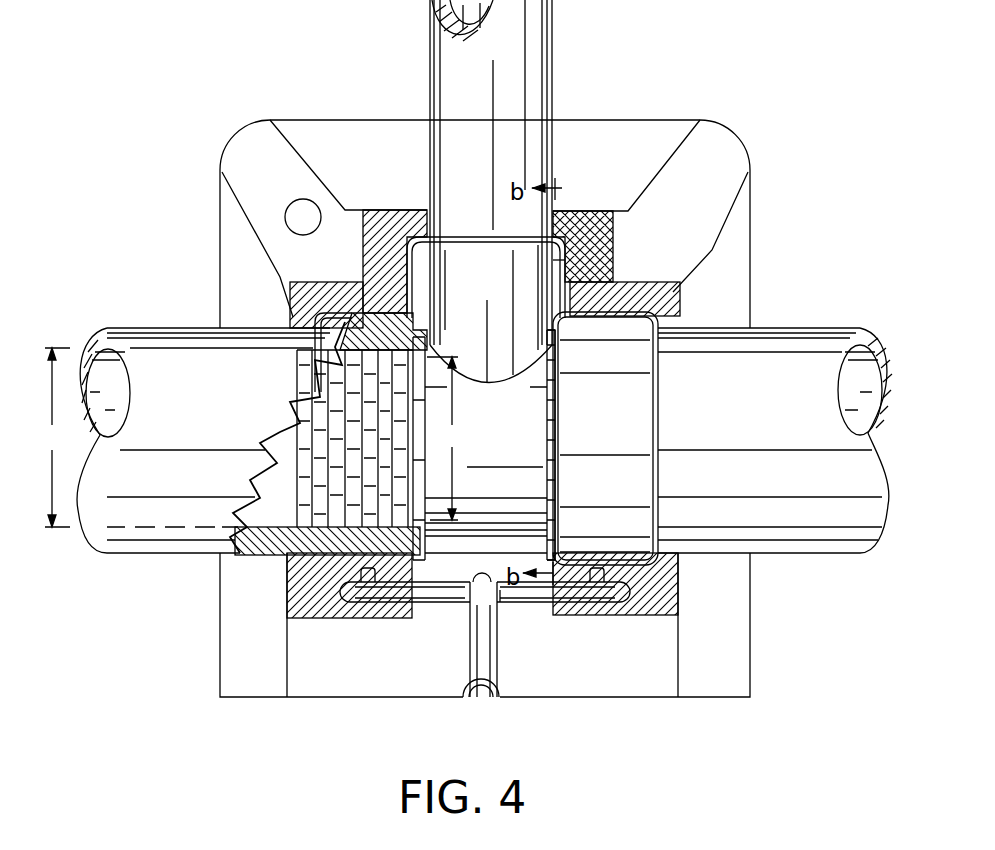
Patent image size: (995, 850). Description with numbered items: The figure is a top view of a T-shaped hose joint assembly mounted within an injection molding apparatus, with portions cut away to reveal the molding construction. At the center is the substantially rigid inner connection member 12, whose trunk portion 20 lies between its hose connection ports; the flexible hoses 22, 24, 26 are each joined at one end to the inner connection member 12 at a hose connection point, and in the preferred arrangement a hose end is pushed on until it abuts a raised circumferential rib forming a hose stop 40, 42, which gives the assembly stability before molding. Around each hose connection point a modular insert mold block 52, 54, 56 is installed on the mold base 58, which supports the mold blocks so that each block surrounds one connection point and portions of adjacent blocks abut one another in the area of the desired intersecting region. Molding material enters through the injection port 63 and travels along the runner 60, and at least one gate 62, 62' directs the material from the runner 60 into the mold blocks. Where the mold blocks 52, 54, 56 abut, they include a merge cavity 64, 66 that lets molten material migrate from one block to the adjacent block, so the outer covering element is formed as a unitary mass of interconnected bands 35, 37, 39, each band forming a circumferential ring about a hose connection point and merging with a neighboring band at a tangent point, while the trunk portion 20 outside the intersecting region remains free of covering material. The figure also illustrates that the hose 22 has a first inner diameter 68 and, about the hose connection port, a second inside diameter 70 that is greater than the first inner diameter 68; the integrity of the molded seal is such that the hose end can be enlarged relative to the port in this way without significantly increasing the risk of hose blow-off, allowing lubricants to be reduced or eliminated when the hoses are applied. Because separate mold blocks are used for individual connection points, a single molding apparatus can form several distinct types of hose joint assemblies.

The inner connection member 12 is at (507, 477).
The trunk portion 20 is at (530, 460).
The flexible hose 22 is at (221, 362).
The flexible hose 24 is at (767, 362).
The flexible hose 26 is at (457, 98).
The band 35 is at (350, 322).
The band 37 is at (593, 233).
The band 39 is at (640, 282).
The hose stop 40 is at (553, 487).
The hose stop 42 is at (485, 602).
The mold block 52 is at (380, 232).
The mold block 54 is at (262, 300).
The mold block 56 is at (700, 297).
The mold base 58 is at (722, 158).
The runner 60 is at (500, 592).
The gate 62 is at (563, 626).
The gate 62' is at (405, 614).
The injection port 63 is at (467, 673).
The merge cavity 64 is at (556, 258).
The merge cavity 66 is at (423, 327).
The first inner diameter 68 is at (53, 437).
The second inside diameter 70 is at (445, 438).